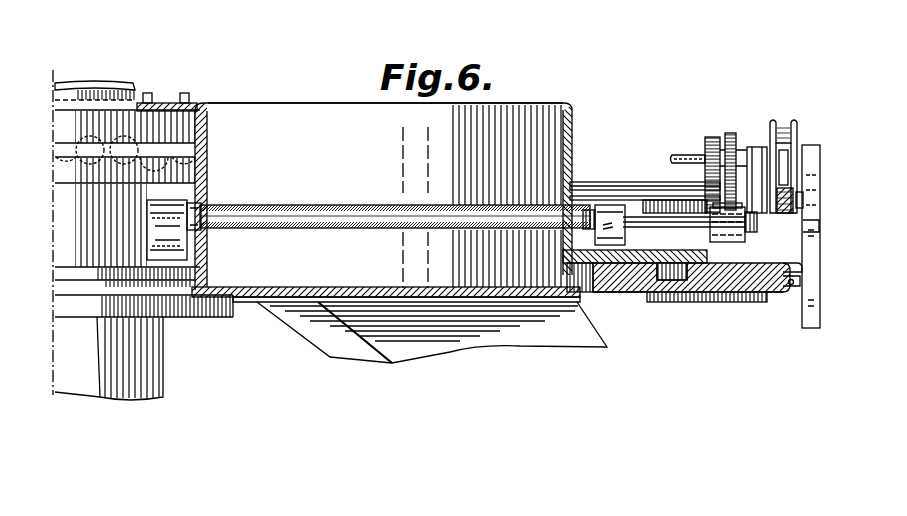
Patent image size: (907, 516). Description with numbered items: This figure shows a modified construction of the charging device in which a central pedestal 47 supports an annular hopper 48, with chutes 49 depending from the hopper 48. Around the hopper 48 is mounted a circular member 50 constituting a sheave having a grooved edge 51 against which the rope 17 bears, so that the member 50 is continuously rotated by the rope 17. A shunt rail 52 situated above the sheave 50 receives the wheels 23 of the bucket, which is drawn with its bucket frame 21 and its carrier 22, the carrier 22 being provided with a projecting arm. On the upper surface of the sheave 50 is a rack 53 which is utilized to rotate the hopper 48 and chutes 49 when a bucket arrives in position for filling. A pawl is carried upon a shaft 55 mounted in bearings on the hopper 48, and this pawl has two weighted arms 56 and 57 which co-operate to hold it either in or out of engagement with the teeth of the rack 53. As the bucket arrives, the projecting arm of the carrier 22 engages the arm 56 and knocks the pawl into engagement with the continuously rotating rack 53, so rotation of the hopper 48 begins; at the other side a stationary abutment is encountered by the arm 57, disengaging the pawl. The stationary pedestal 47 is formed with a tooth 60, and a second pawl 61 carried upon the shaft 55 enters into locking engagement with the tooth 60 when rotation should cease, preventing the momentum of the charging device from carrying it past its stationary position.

The rope 17 is at (792, 288).
The bracket 21 is at (810, 225).
The carrier 22 is at (806, 200).
The wheels 23 is at (785, 134).
The central pedestal 47 is at (143, 347).
The annular hopper 48 is at (333, 127).
The chutes 49 is at (318, 336).
The circular member 50 is at (788, 268).
The grooved edge 51 is at (798, 278).
The shunt rail 52 is at (798, 208).
The rack 53 is at (722, 282).
The shaft 55 is at (343, 217).
The weighted arm 56 is at (760, 156).
The weighted arm 57 is at (718, 192).
The tooth 60 is at (167, 262).
The second pawl 61 is at (202, 208).